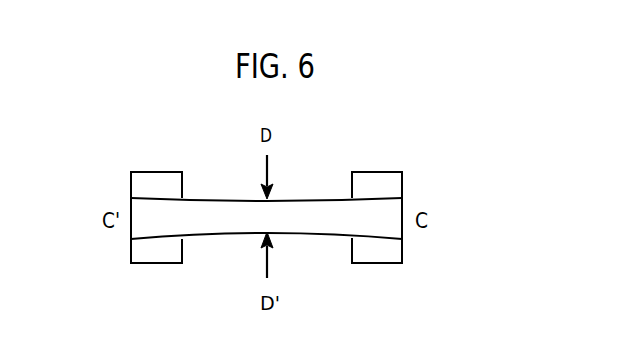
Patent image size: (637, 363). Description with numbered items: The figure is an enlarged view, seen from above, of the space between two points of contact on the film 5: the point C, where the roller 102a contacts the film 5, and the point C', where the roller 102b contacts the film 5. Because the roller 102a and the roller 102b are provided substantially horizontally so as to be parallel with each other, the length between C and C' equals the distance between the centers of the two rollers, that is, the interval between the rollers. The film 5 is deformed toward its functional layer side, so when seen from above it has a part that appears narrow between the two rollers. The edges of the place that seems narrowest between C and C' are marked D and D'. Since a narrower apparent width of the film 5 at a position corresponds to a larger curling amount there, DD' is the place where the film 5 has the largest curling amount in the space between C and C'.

The film 5 is at (223, 206).
The roller 102b is at (156, 178).
The roller 102a is at (377, 179).